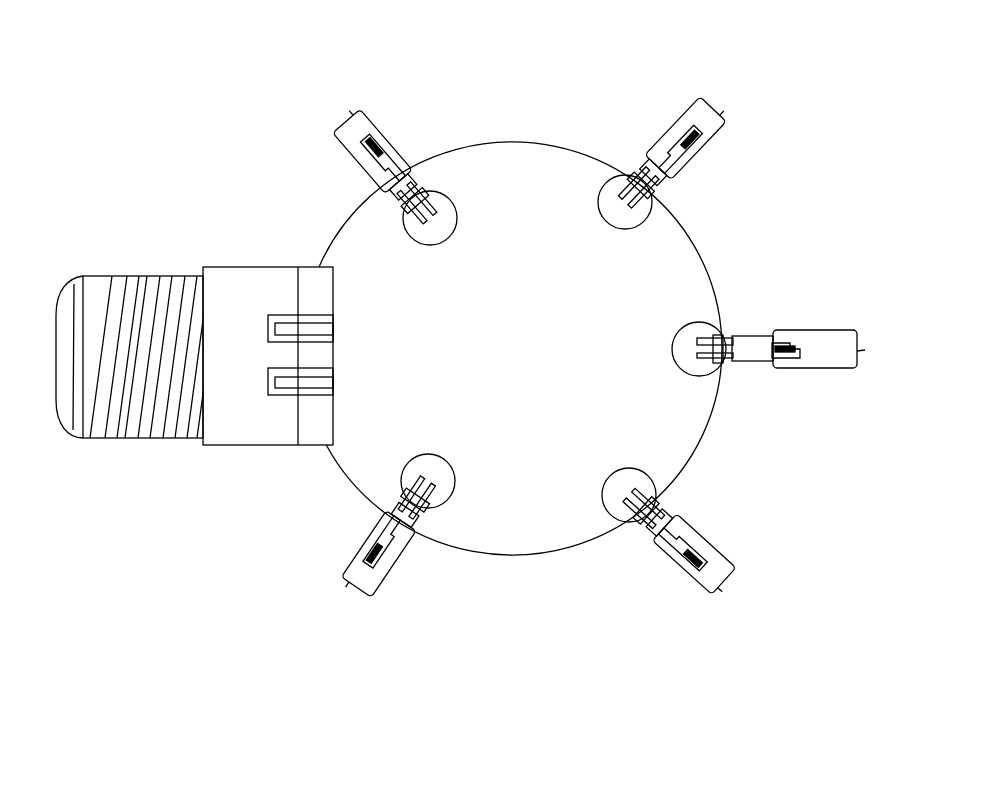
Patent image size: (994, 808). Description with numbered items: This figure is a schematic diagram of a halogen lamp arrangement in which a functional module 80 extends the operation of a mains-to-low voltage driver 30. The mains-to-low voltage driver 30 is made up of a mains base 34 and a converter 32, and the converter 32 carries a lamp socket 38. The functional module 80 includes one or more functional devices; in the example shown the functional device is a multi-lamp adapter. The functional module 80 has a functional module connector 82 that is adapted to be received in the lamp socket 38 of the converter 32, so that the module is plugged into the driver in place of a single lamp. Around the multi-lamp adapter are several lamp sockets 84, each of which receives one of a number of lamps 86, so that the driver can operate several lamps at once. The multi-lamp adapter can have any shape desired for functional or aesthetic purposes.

The mains-to-low voltage driver 30 is at (127, 240).
The converter 32 is at (228, 445).
The mains base 34 is at (110, 438).
The lamp socket 38 is at (273, 395).
The functional module 80 is at (536, 177).
The functional module connector 82 is at (287, 323).
The lamp sockets 84 is at (445, 193).
The lamps 86 is at (366, 110).